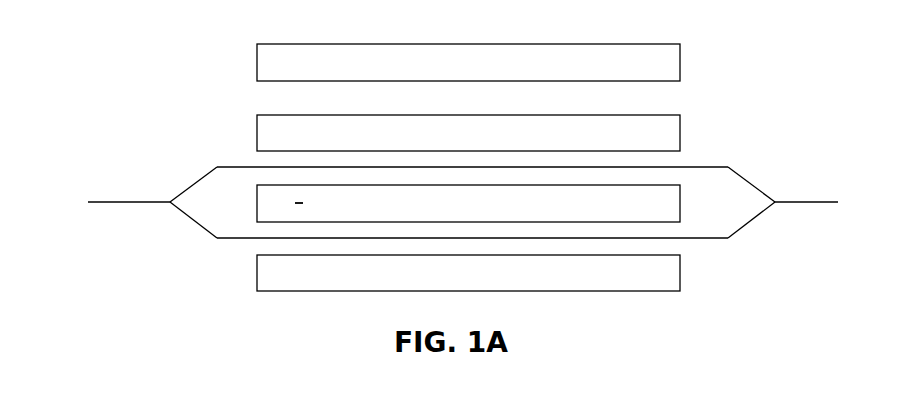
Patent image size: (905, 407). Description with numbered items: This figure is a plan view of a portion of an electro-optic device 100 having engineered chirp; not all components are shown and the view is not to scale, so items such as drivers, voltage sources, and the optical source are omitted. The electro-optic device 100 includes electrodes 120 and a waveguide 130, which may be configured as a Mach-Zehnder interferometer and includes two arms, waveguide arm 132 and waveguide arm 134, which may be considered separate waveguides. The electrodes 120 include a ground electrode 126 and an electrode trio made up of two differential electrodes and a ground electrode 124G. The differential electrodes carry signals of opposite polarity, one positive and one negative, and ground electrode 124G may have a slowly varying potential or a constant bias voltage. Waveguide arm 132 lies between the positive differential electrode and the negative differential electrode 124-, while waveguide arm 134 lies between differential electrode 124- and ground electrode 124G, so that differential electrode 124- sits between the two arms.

The electro-optic device 100 is at (470, 22).
The electrodes 120 is at (220, 116).
The ground electrode 126 is at (449, 73).
The differential electrode 124- is at (491, 213).
The ground electrode 124G is at (496, 283).
The waveguide 130 is at (433, 207).
The waveguide arm 132 is at (715, 167).
The waveguide arm 134 is at (703, 238).